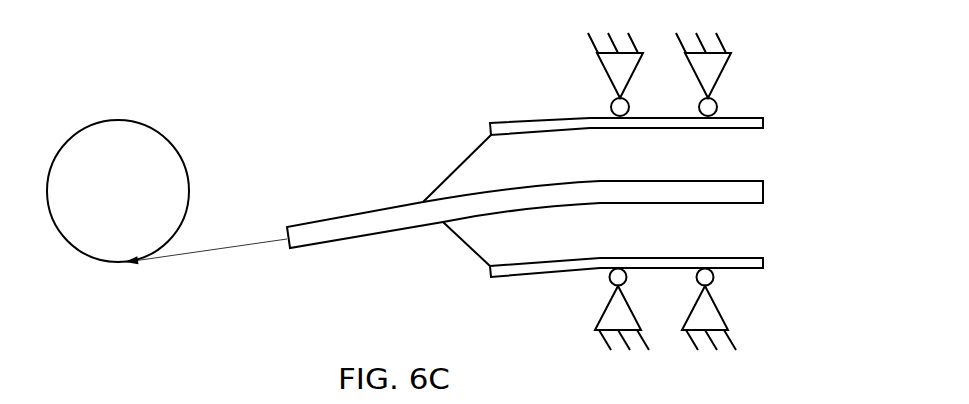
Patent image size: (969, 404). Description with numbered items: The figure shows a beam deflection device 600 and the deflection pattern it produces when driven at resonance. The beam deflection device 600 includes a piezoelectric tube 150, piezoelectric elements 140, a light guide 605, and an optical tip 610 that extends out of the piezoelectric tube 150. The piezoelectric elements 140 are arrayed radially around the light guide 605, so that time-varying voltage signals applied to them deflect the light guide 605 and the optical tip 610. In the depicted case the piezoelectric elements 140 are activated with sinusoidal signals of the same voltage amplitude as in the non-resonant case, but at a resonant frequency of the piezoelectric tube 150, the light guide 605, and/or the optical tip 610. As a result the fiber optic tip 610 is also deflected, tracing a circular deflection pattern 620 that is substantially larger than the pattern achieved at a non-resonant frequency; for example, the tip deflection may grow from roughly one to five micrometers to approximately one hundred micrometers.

The beam deflection device 600 is at (349, 114).
The light guide 605 is at (532, 186).
The optical tip 610 is at (350, 238).
The circular deflection pattern 620 is at (102, 263).
The piezoelectric tube 150 is at (533, 265).
The piezoelectric elements 140 is at (720, 78).